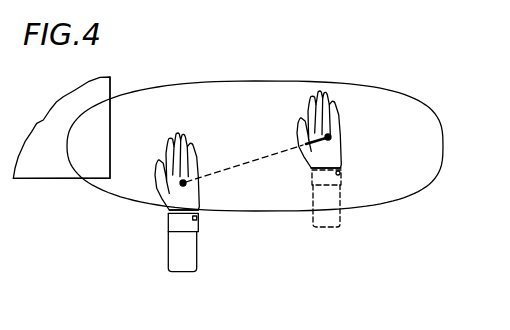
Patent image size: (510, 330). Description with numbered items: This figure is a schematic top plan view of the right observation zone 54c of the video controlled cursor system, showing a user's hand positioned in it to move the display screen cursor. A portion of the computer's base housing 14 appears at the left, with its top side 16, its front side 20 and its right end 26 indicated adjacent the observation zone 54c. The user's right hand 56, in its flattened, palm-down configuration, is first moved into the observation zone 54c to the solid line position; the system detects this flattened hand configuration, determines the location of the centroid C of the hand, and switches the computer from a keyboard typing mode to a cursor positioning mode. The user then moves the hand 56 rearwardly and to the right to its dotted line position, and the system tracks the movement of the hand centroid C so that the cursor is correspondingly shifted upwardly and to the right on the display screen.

The base housing 14 is at (67, 180).
The top side 16 is at (55, 173).
The front side 20 is at (50, 180).
The right end 26 is at (112, 138).
The right observation zone 54c is at (400, 200).
The right hand 56 is at (197, 153).
The centroid C is at (180, 183).